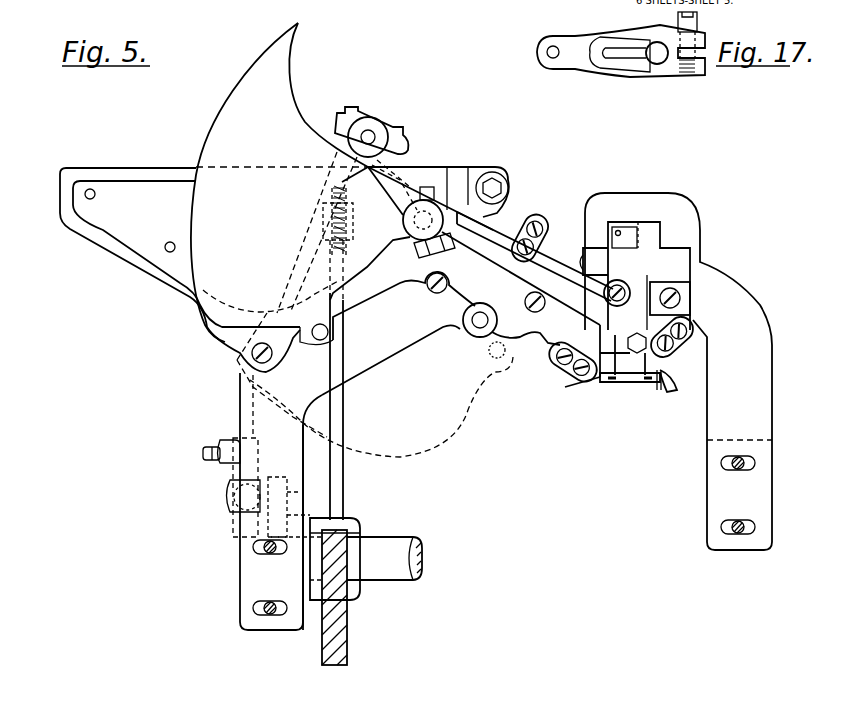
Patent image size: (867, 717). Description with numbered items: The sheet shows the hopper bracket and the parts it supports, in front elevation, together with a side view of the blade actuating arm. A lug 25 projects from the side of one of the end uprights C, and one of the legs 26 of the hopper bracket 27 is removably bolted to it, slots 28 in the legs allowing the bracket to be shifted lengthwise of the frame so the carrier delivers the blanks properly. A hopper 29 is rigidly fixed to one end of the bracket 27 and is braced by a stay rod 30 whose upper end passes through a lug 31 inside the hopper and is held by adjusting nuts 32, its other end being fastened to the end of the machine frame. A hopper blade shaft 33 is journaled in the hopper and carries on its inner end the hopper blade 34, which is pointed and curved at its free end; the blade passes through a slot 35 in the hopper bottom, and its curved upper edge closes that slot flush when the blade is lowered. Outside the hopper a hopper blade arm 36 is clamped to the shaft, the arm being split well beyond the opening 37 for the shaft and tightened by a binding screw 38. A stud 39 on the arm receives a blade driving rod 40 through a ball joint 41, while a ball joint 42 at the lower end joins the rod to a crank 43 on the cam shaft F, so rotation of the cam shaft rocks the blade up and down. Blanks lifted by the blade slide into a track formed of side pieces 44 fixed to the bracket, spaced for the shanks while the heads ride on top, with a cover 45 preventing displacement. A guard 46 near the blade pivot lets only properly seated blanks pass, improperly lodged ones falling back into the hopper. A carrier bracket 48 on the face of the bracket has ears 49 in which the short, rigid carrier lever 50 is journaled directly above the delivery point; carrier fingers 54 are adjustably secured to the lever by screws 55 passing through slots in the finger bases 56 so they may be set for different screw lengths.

In FIG. 5, the lug 25 is at (311, 622).
In FIG. 5, the leg 26 is at (707, 495).
In FIG. 5, the hopper bracket 27 is at (392, 347).
In FIG. 5, the slot 28 is at (721, 528).
In FIG. 5, the hopper 29 is at (117, 248).
In FIG. 5, the stay rod 30 is at (346, 470).
In FIG. 5, the lug 31 is at (323, 215).
In FIG. 5, the adjusting nut 32 is at (325, 196).
In FIG. 5, the hopper blade shaft 33 is at (432, 212).
In FIG. 5, the hopper blade 34 is at (222, 114).
In FIG. 5, the slot 35 is at (228, 308).
In FIG. 5, the hopper blade arm 36 is at (405, 170).
In FIG. 17, the hopper blade arm 36 is at (620, 68).
In FIG. 17, the opening 37 is at (657, 64).
In FIG. 17, the binding screw 38 is at (700, 30).
In FIG. 5, the stud 39 is at (368, 130).
In FIG. 5, the blade driving rod 40 is at (238, 420).
In FIG. 5, the ball joint 41 is at (386, 118).
In FIG. 5, the ball joint 42 is at (222, 490).
In FIG. 5, the crank 43 is at (278, 477).
In FIG. 5, the side piece 44 is at (547, 343).
In FIG. 5, the cover 45 is at (500, 230).
In FIG. 5, the guard 46 is at (437, 184).
In FIG. 5, the carrier bracket 48 is at (688, 297).
In FIG. 5, the ear 49 is at (592, 248).
In FIG. 5, the carrier lever 50 is at (658, 255).
In FIG. 5, the carrier finger 54 is at (659, 384).
In FIG. 5, the screw 55 is at (648, 382).
In FIG. 5, the finger base 56 is at (602, 356).
In FIG. 5, the end upright C is at (350, 648).
In FIG. 5, the cam shaft F is at (424, 547).